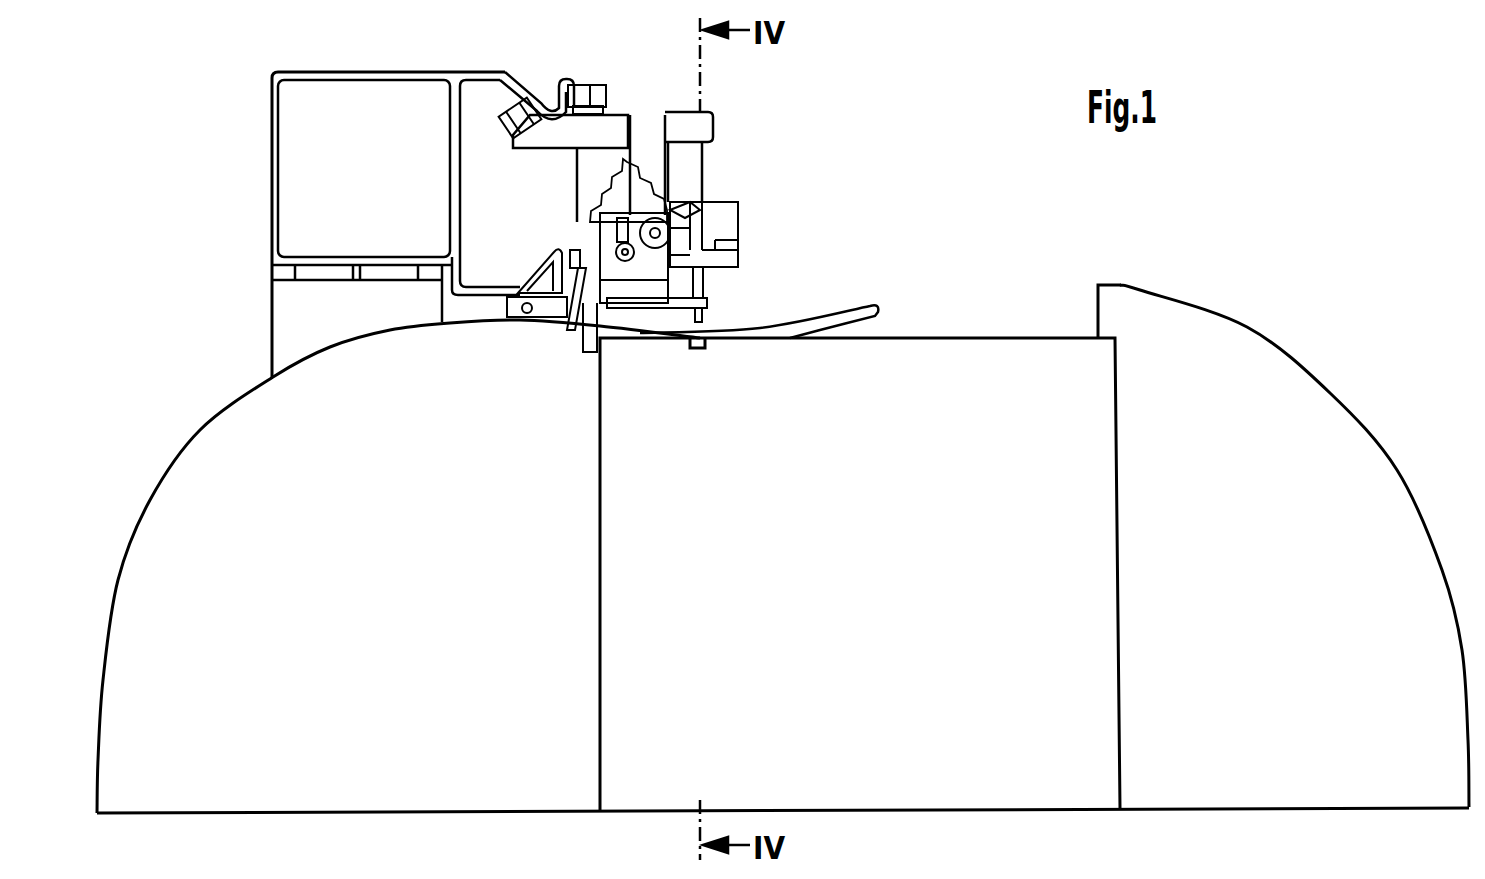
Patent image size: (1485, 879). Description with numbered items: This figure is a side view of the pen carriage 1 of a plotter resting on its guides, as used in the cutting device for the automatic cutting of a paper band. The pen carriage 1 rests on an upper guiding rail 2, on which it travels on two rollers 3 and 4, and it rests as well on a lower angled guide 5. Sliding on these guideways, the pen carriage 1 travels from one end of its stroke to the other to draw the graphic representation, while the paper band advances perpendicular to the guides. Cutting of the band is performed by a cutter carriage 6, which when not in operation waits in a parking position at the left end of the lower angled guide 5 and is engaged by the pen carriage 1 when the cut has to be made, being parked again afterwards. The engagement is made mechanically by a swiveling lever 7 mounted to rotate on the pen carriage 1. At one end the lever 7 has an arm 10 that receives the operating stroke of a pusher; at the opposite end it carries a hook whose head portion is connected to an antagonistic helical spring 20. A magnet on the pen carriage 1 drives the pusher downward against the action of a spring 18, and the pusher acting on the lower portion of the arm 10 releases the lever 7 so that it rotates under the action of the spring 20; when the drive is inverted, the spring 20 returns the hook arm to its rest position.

The pen carriage 1 is at (740, 202).
The upper guiding rail 2 is at (543, 83).
The roller 3 is at (600, 85).
The roller 4 is at (508, 111).
The lower angled guide 5 is at (537, 265).
The cutter carriage 6 is at (551, 307).
The swiveling lever 7 is at (638, 266).
The arm 10 is at (683, 204).
The spring 18 is at (645, 175).
The antagonistic helical spring 20 is at (585, 200).